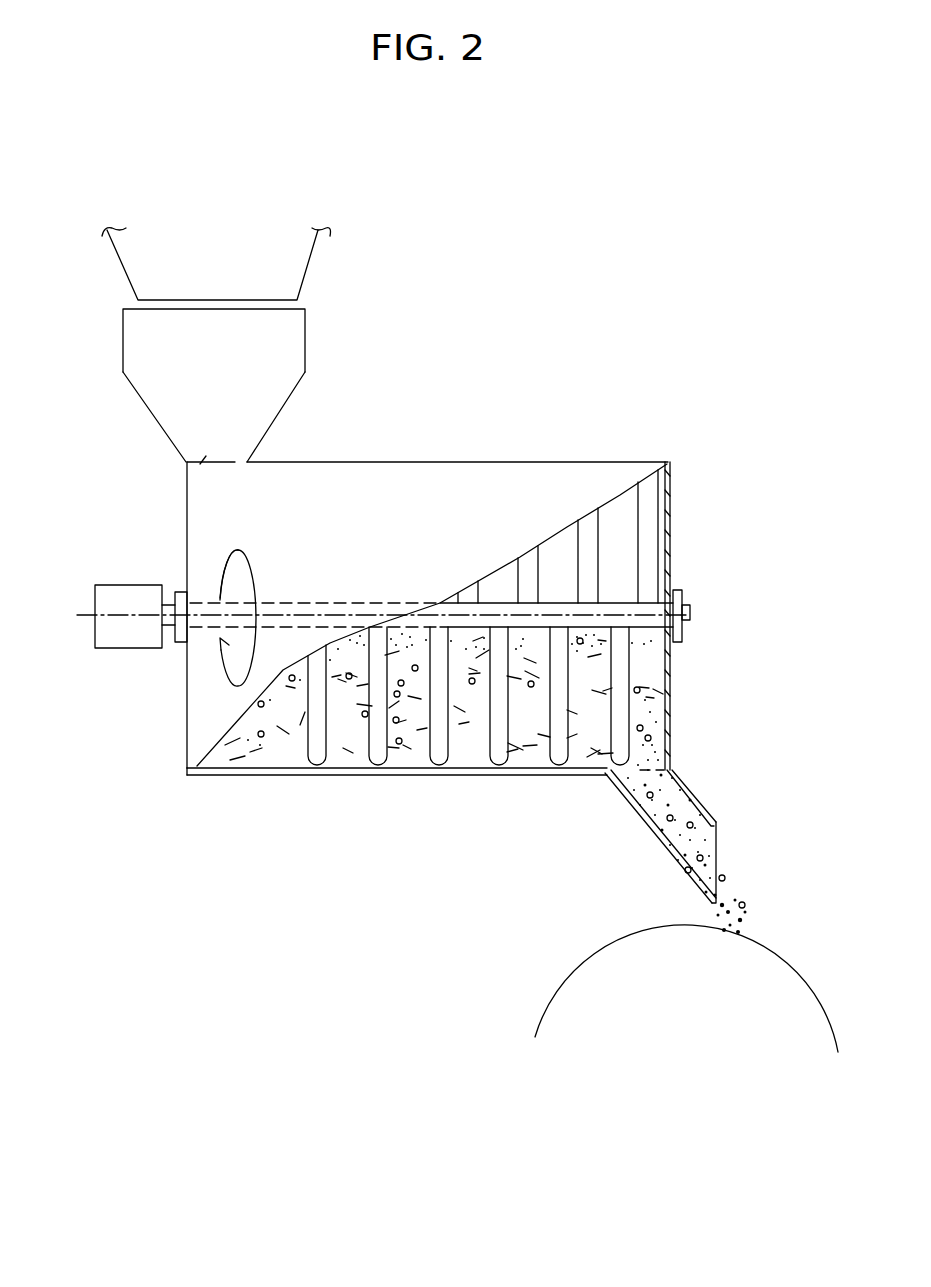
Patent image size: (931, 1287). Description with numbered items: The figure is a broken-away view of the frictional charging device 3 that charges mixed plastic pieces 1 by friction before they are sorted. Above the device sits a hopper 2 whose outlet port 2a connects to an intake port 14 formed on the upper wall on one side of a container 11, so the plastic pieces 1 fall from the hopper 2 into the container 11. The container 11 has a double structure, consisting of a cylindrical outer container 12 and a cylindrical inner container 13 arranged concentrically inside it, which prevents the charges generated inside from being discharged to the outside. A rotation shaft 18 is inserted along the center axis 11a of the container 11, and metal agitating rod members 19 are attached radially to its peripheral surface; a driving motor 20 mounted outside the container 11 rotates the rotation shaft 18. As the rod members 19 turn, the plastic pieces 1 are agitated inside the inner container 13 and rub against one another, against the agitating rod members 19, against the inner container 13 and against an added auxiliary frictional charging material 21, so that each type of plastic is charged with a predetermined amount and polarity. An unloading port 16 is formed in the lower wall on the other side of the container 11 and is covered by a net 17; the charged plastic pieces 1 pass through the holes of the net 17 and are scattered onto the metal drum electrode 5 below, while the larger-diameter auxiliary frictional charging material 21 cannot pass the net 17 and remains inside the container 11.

The plastic pieces 1 is at (653, 817).
The hopper 2 is at (313, 258).
The outlet port 2a is at (157, 305).
The frictional charging device 3 is at (381, 540).
The metal drum electrode 5 is at (776, 965).
The container 11 is at (730, 590).
The center axis 11a is at (692, 613).
The outer container 12 is at (670, 475).
The inner container 13 is at (703, 616).
The intake port 14 is at (196, 462).
The unloading port 16 is at (673, 790).
The net 17 is at (617, 780).
The rotation shaft 18 is at (648, 622).
The agitating rod members 19 is at (648, 533).
The driving motor 20 is at (122, 650).
The auxiliary frictional charging material 21 is at (265, 732).